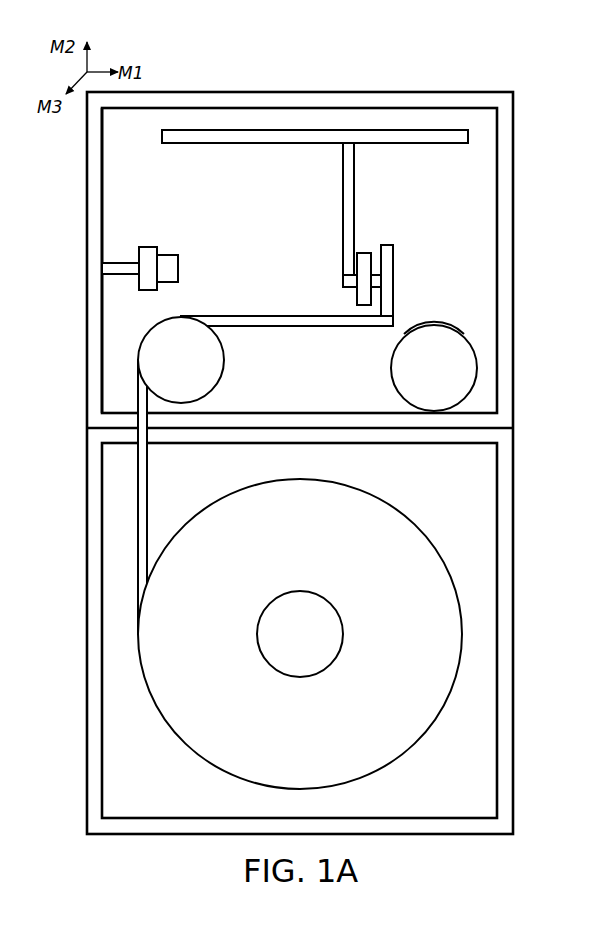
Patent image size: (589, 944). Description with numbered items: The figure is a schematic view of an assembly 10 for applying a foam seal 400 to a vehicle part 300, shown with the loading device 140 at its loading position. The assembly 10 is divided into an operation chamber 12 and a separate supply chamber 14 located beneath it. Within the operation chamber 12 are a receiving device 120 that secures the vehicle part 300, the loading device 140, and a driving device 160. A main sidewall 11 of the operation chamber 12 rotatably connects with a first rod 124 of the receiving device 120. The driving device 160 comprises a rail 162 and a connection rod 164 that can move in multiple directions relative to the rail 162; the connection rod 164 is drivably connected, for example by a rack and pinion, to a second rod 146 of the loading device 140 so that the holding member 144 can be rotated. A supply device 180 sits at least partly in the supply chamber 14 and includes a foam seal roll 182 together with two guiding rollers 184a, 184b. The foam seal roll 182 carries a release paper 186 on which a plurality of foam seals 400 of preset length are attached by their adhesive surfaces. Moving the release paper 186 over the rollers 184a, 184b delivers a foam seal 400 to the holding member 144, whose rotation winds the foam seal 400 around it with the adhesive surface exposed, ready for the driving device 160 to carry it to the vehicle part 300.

The assembly 10 is at (558, 116).
The main sidewall 11 is at (104, 300).
The operation chamber 12 is at (483, 179).
The supply chamber 14 is at (481, 515).
The receiving device 120 is at (140, 258).
The first rod 124 is at (118, 277).
The vehicle part 300 is at (173, 271).
The driving device 160 is at (315, 208).
The rail 162 is at (237, 143).
The connection rod 164 is at (316, 215).
The loading device 140 is at (369, 282).
The holding member 144 is at (373, 285).
The second rod 146 is at (343, 282).
The supply device 180 is at (263, 529).
The foam seal 400 is at (258, 316).
The guiding roller 184a is at (210, 380).
The guiding roller 184b is at (402, 373).
The release paper 186 is at (415, 326).
The foam seal roll 182 is at (400, 730).